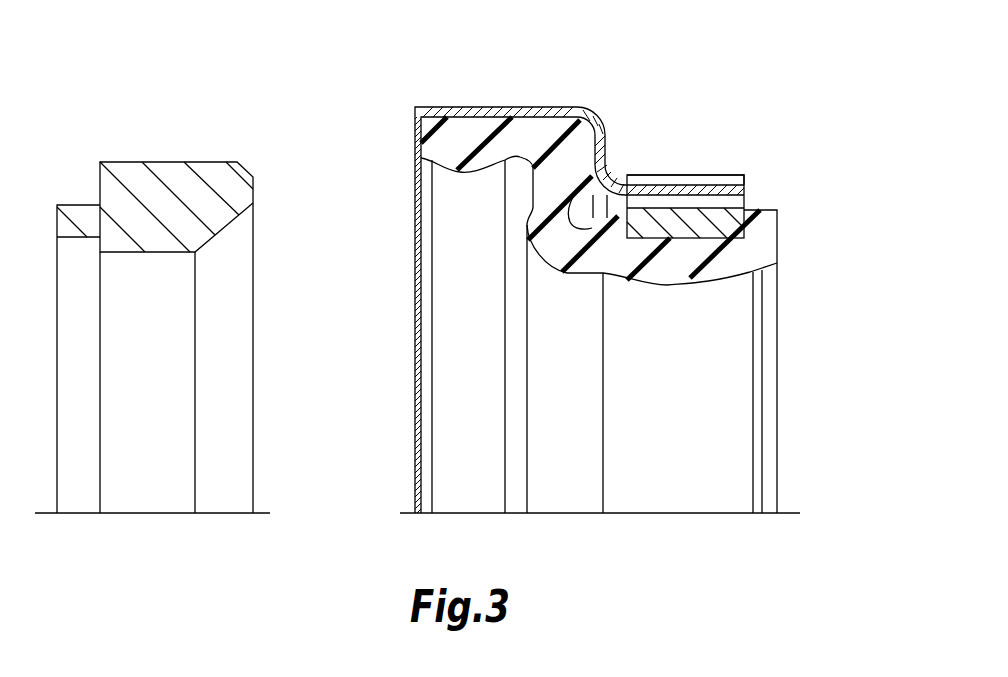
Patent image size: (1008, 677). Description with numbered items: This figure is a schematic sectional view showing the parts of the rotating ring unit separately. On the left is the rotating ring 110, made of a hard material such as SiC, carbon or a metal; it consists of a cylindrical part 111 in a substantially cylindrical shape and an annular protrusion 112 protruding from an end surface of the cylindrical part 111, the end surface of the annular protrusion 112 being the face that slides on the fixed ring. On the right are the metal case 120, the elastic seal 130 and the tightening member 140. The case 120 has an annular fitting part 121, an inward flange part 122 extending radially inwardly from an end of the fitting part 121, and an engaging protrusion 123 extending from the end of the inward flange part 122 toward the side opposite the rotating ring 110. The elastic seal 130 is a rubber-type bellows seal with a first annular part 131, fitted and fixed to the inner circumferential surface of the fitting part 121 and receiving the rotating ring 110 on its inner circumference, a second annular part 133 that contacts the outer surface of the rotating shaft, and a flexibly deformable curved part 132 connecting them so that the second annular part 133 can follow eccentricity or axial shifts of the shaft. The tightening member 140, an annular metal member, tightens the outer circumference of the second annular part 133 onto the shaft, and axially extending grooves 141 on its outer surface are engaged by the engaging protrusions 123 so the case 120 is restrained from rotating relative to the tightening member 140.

The rotating ring 110 is at (162, 120).
The cylindrical part 111 is at (207, 177).
The annular protrusion 112 is at (73, 213).
The metal case 120 is at (574, 90).
The annular fitting part 121 is at (522, 115).
The inward flange part 122 is at (612, 143).
The engaging protrusion 123 is at (720, 202).
The elastic seal 130 is at (791, 269).
The first annular part 131 is at (470, 133).
The curved part 132 is at (545, 247).
The second annular part 133 is at (707, 273).
The tightening member 140 is at (766, 190).
The grooves 141 is at (678, 202).